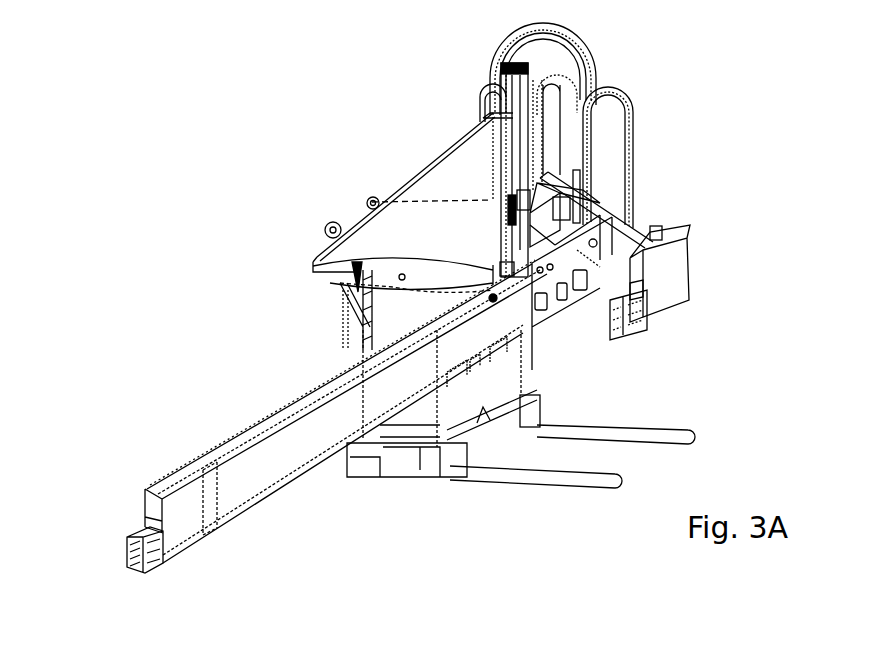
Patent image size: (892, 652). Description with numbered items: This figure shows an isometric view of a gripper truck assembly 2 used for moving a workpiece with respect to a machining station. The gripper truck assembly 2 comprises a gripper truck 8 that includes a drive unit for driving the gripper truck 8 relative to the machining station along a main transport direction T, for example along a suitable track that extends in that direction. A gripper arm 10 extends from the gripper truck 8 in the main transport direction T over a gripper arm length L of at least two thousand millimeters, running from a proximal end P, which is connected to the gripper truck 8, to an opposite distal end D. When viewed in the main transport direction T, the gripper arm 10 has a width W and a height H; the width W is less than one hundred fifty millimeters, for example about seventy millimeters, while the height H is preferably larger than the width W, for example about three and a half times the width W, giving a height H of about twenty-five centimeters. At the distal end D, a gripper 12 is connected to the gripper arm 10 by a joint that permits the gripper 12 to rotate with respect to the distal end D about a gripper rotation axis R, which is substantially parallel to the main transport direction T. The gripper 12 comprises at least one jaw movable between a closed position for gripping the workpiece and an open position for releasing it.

The gripper truck assembly 2 is at (186, 188).
The gripper truck 8 is at (322, 172).
The gripper arm 10 is at (338, 410).
The gripper 12 is at (105, 551).
The distal end D is at (189, 440).
The height H is at (263, 490).
The width W is at (195, 507).
The gripper arm length L is at (536, 344).
The main transport direction T is at (355, 541).
The gripper rotation axis R is at (128, 557).
The proximal end P is at (552, 346).